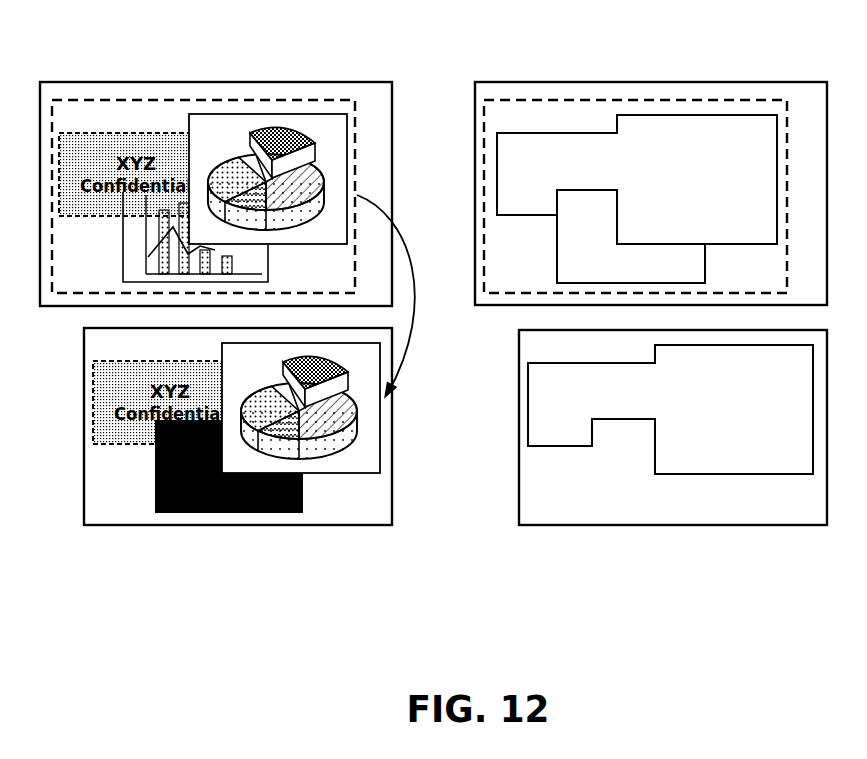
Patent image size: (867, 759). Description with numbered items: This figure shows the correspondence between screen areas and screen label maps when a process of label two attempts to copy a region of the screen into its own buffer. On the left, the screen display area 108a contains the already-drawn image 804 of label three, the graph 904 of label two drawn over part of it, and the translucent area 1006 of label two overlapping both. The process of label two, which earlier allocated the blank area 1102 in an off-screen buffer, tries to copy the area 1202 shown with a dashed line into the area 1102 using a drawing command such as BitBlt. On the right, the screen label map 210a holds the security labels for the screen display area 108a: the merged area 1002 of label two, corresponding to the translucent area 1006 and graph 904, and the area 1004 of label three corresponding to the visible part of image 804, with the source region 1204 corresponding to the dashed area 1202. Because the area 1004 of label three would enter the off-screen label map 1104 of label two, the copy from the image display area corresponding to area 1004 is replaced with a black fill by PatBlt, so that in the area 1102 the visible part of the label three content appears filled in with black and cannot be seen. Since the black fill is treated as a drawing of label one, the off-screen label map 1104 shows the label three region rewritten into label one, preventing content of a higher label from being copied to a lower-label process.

The screen display area 108a is at (223, 82).
The area shown with a dashed line 1202 is at (130, 100).
The translucent area 1006 is at (77, 131).
The image 804 is at (123, 246).
The graph 904 is at (310, 246).
The blank area 1102 is at (300, 527).
The screen label map 210a is at (671, 82).
The source area of the screen label map 1204 is at (540, 100).
The area of the label 2 1002 is at (730, 245).
The area of the label 3 1004 is at (556, 242).
The off-screen label map 1104 is at (700, 527).